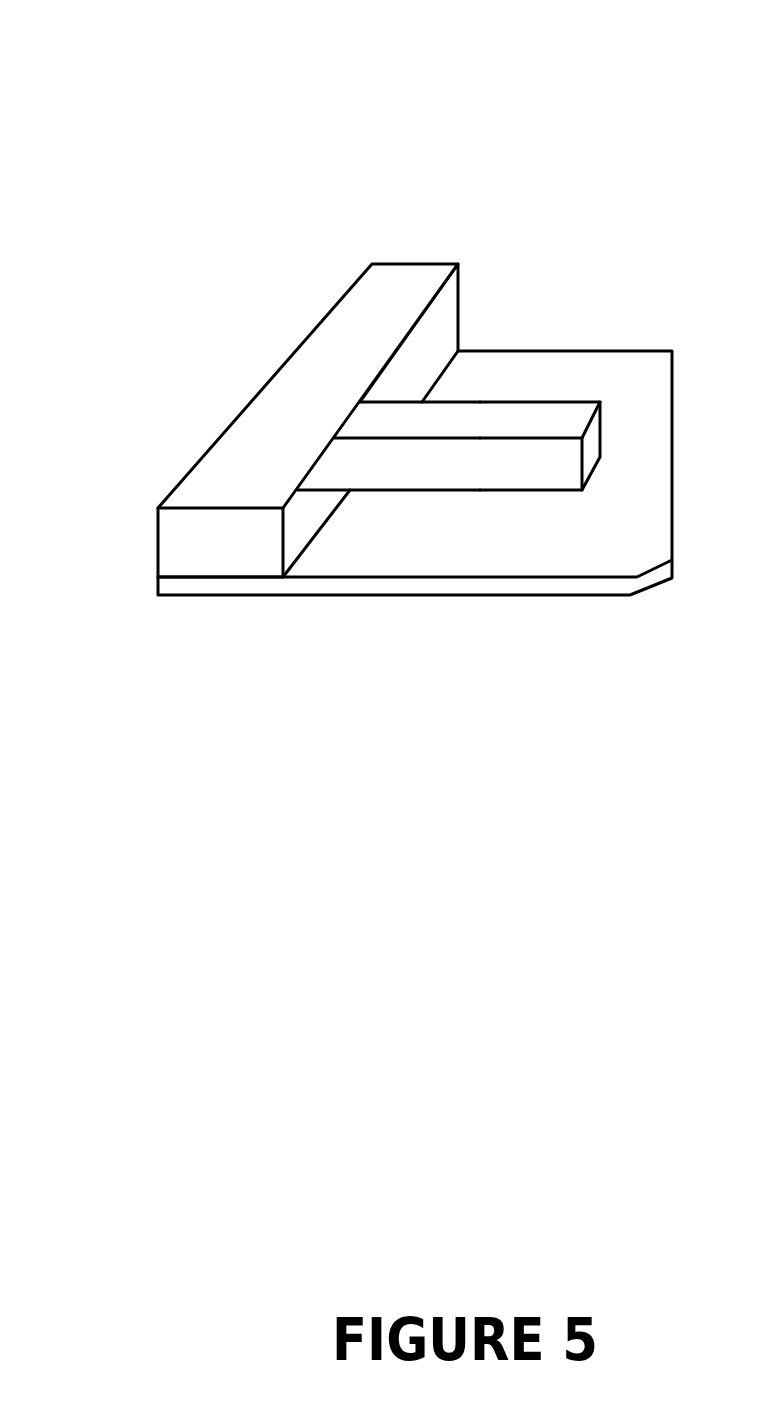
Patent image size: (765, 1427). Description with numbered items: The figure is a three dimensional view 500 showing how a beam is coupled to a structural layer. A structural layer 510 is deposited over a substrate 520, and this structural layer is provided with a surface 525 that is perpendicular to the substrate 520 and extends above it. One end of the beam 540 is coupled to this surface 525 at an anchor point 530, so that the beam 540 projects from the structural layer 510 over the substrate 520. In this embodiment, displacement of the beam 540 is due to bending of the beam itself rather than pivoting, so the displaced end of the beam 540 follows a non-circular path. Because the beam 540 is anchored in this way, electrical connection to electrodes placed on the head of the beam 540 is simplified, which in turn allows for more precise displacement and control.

The three dimensional view 500 is at (91, 35).
The structural layer 510 is at (308, 420).
The substrate 520 is at (491, 571).
The surface 525 is at (438, 372).
The anchor point 530 is at (373, 430).
The beam 540 is at (523, 430).